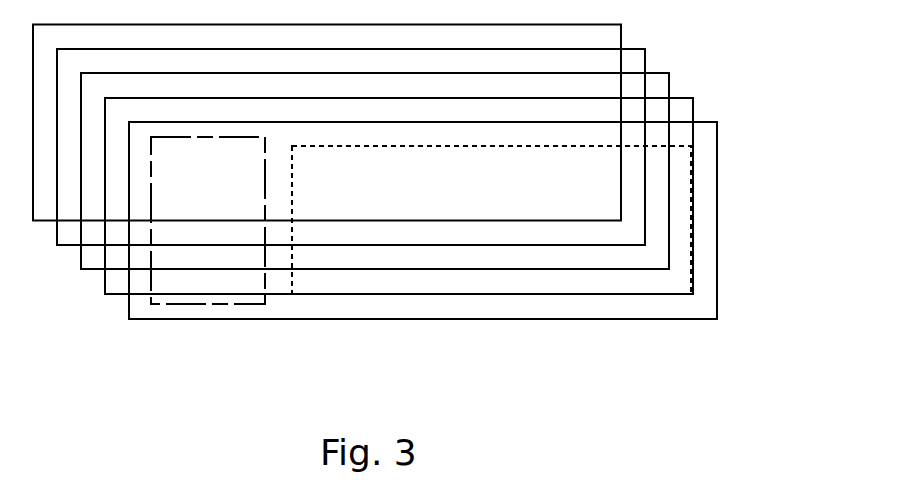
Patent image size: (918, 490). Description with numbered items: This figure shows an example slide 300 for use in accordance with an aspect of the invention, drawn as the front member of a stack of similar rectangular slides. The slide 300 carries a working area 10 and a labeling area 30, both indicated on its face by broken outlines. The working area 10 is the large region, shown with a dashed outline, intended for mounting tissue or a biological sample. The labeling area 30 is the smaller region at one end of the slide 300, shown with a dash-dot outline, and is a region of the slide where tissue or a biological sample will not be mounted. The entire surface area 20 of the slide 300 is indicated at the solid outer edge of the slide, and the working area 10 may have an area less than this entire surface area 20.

The slide 300 is at (414, 172).
The working area 10 is at (691, 168).
The entire surface area 20 is at (718, 297).
The labeling area 30 is at (179, 303).